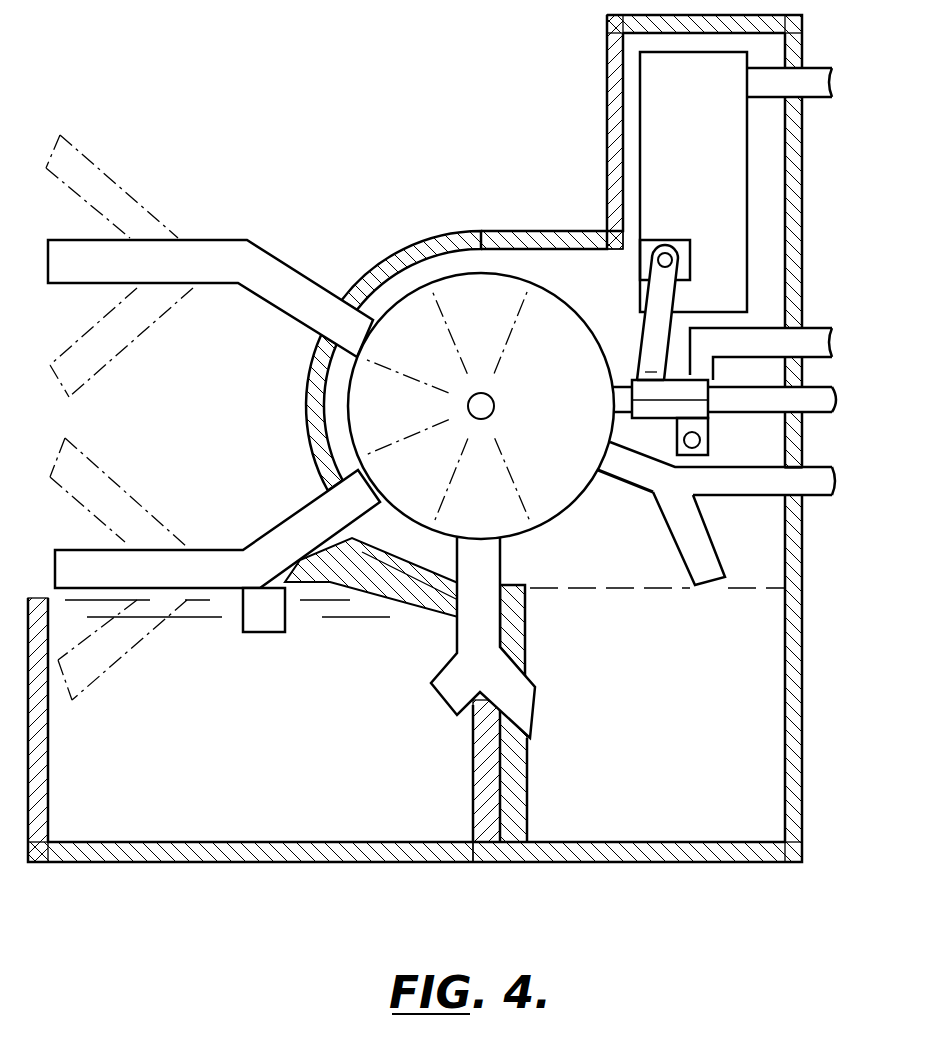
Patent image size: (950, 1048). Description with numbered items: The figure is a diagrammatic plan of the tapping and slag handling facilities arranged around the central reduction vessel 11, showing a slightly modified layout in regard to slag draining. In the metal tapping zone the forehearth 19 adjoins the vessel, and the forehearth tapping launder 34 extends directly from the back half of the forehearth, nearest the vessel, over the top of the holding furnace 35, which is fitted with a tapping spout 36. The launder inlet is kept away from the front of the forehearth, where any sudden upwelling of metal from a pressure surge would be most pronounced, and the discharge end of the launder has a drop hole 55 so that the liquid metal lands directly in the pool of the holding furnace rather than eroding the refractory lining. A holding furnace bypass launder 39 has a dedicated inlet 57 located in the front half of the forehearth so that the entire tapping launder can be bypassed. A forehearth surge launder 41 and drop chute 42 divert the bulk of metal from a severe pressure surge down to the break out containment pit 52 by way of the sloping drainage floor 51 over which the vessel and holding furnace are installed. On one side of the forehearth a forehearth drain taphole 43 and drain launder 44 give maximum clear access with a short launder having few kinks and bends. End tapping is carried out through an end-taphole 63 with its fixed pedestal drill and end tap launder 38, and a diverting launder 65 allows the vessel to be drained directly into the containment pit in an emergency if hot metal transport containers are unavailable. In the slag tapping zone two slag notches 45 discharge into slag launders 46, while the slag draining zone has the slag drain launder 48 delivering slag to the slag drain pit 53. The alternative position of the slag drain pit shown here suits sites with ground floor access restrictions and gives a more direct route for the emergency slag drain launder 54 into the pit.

The reduction vessel 11 is at (482, 272).
The forehearth 19 is at (633, 362).
The forehearth tapping launder 34 is at (658, 305).
The holding furnace 35 is at (676, 147).
The tapping spout 36 is at (825, 78).
The end tap launder 38 is at (818, 485).
The holding furnace bypass launder 39 is at (808, 343).
The forehearth surge launder 41 is at (703, 427).
The drop chute 42 is at (715, 490).
The forehearth drain taphole 43 is at (630, 402).
The forehearth drain launder 44 is at (817, 398).
The slag notch 45 is at (355, 334).
The slag launder 46 is at (212, 262).
The slag drain launder 48 is at (457, 685).
The drainage floor 51 is at (602, 288).
The break out containment pit 52 is at (644, 709).
The slag drain pit 53 is at (162, 766).
The emergency slag drain launder 54 is at (262, 616).
The drop hole 55 is at (677, 253).
The dedicated inlet 57 is at (648, 380).
The end-taphole 63 is at (602, 448).
The diverting launder 65 is at (720, 553).